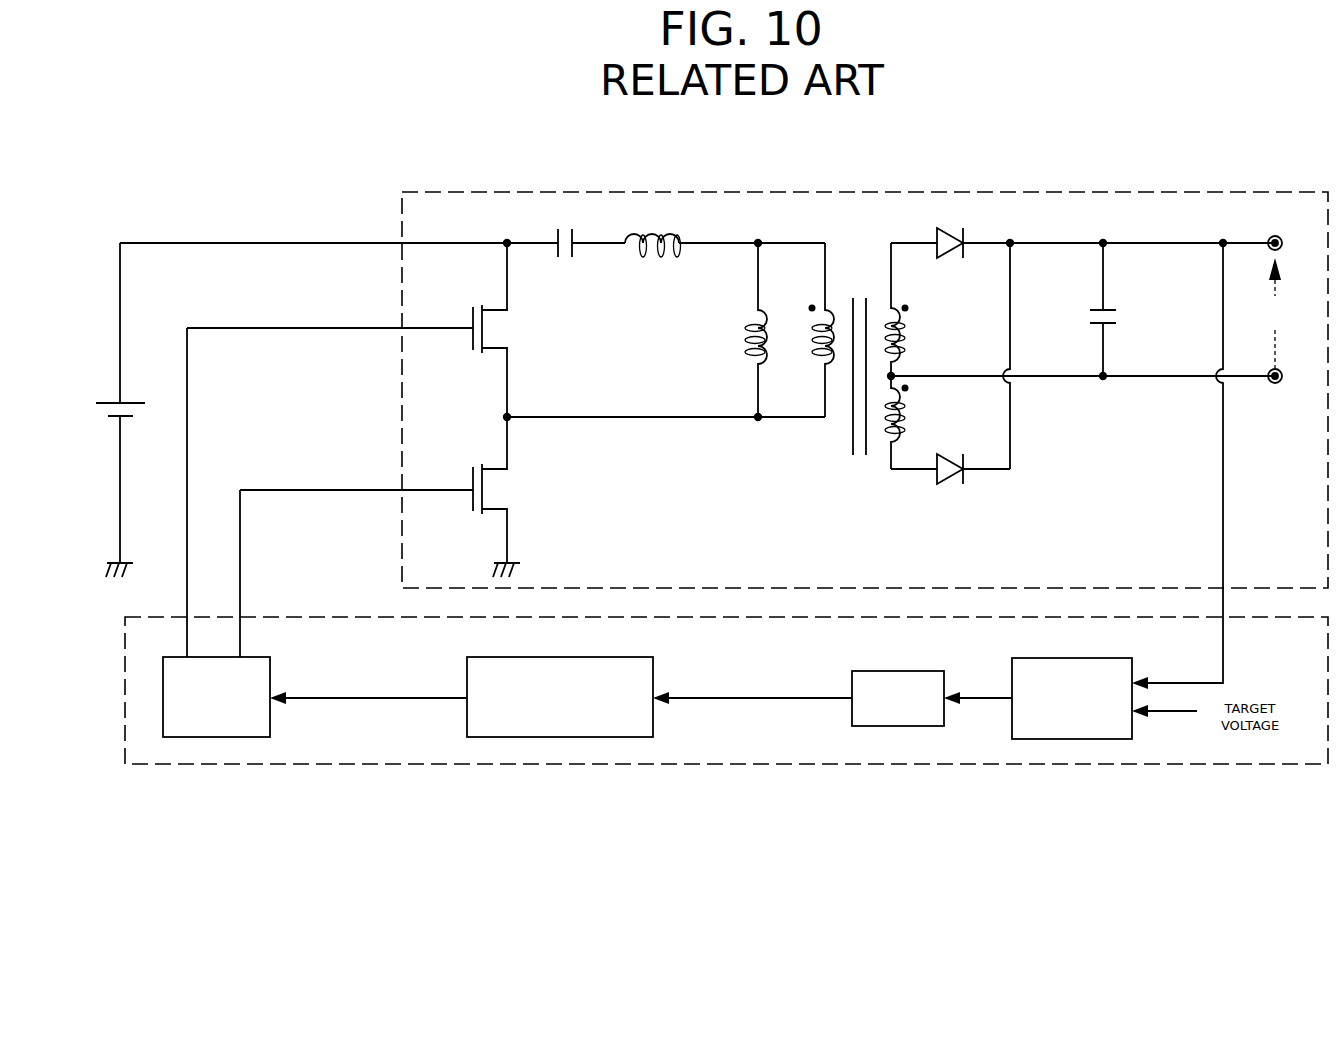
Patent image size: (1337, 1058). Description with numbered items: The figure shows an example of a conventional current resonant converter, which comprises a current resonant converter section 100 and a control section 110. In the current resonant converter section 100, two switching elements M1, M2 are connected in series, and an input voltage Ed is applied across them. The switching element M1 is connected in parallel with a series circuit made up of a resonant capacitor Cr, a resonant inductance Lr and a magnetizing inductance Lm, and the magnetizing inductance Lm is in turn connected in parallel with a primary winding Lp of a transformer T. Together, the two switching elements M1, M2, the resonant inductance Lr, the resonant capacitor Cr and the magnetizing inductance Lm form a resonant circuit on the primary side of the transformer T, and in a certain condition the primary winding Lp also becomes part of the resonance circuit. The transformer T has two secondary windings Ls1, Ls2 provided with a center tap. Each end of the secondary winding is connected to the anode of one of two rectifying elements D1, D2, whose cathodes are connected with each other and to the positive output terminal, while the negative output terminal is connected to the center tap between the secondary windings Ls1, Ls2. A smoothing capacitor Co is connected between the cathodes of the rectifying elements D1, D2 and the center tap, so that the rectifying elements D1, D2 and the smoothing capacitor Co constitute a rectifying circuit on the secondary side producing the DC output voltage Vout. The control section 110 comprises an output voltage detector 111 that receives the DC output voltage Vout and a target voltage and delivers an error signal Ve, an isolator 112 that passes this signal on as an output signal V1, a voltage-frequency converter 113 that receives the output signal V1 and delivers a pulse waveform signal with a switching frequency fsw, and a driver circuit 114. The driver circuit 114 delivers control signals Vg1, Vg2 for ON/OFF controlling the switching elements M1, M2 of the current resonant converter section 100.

The current resonant converter section 100 is at (1027, 191).
The control section 110 is at (1165, 765).
The output voltage detector 111 is at (1098, 658).
The isolator 112 is at (900, 671).
The voltage-frequency converter 113 is at (592, 657).
The driver circuit 114 is at (255, 657).
The input voltage Ed is at (120, 410).
The switching element M1 is at (347, 330).
The switching element M2 is at (380, 497).
The resonant capacitor Cr is at (565, 230).
The resonant inductance Lr is at (653, 230).
The magnetizing inductance Lm is at (738, 330).
The primary winding Lp is at (809, 330).
The transformer T is at (858, 358).
The secondary winding Ls1 is at (918, 309).
The secondary winding Ls2 is at (918, 422).
The rectifying element D1 is at (1083, 230).
The rectifying element D2 is at (950, 482).
The smoothing capacitor Co is at (1114, 309).
The DC output voltage Vout is at (1275, 309).
The control signal Vg1 is at (163, 492).
The control signal Vg2 is at (218, 573).
The switching frequency fsw is at (368, 687).
The output signal V1 is at (752, 689).
The error signal Ve is at (978, 689).